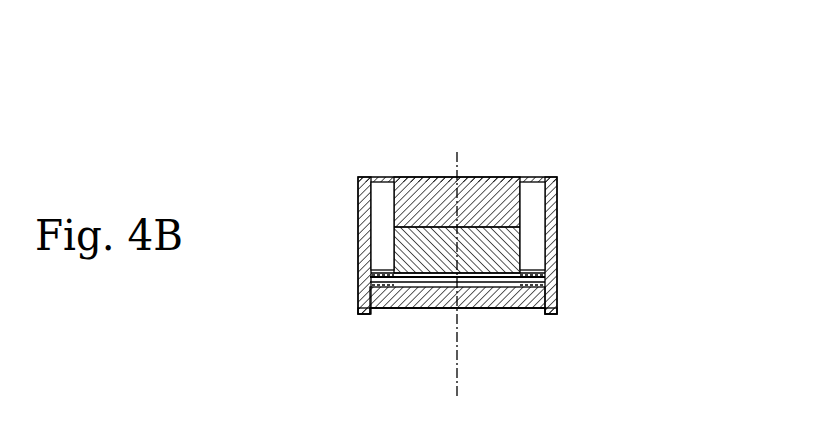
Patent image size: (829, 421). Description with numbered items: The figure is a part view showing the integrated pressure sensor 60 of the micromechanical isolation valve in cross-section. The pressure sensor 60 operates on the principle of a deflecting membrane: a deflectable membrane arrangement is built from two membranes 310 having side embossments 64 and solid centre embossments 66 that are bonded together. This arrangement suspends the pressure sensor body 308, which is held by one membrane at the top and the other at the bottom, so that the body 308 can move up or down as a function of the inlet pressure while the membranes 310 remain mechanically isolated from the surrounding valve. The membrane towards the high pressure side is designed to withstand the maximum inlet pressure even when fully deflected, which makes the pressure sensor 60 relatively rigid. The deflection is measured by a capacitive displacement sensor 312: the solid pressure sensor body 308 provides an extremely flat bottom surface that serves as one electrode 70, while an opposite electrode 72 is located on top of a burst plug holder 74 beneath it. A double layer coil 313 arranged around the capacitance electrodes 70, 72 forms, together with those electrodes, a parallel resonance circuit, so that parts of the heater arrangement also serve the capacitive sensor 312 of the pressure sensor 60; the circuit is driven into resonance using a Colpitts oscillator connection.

The pressure sensor 60 is at (586, 114).
The side embossments 64 is at (360, 205).
The solid centre embossments 66 is at (415, 210).
The pressure sensor body 308 is at (440, 177).
The membranes 310 is at (373, 177).
The electrode 70 is at (483, 277).
The opposite electrode 72 is at (517, 287).
The burst plug holder 74 is at (436, 277).
The capacitive sensor 312 is at (412, 308).
The double layer coil 313 is at (358, 311).